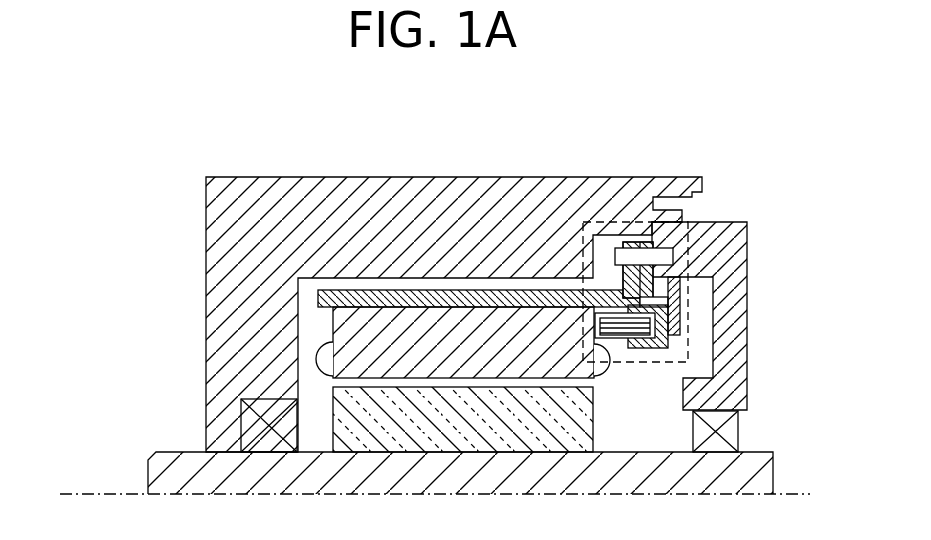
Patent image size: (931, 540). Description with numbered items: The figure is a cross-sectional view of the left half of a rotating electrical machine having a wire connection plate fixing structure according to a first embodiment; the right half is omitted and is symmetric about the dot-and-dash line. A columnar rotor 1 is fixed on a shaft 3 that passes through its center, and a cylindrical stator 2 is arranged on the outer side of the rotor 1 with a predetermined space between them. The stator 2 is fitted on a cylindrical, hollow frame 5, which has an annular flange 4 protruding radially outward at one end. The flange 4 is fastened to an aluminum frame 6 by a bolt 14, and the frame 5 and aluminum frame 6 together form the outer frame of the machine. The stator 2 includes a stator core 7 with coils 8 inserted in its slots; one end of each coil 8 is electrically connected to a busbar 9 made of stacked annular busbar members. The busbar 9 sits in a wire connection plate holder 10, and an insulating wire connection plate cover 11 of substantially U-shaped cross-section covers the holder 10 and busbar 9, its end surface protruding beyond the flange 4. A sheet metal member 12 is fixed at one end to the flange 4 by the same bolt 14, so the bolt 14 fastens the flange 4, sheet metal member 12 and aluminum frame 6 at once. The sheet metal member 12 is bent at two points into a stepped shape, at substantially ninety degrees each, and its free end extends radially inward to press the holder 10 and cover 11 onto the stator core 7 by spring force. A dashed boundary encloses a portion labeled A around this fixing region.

The rotor 1 is at (333, 392).
The stator 2 is at (333, 325).
The shaft 3 is at (170, 452).
The flange 4 is at (687, 252).
The frame 5 is at (330, 295).
The aluminum frame 6 is at (747, 272).
The stator core 7 is at (440, 290).
The coil 8 is at (333, 350).
The busbar 9 is at (683, 323).
The wire connection plate holder 10 is at (626, 345).
The wire connection plate cover 11 is at (620, 342).
The sheet metal member 12 is at (672, 342).
The bolt 14 is at (606, 262).
The region A is at (748, 228).